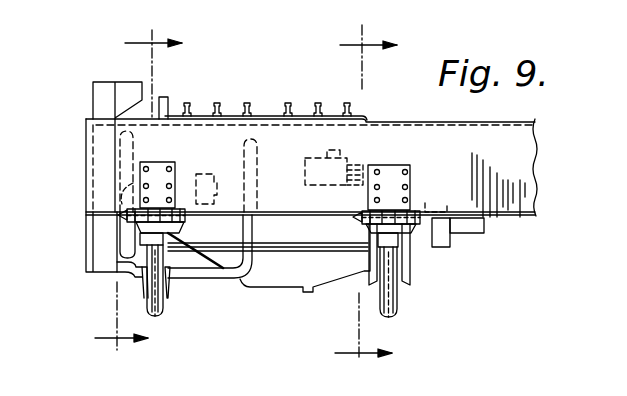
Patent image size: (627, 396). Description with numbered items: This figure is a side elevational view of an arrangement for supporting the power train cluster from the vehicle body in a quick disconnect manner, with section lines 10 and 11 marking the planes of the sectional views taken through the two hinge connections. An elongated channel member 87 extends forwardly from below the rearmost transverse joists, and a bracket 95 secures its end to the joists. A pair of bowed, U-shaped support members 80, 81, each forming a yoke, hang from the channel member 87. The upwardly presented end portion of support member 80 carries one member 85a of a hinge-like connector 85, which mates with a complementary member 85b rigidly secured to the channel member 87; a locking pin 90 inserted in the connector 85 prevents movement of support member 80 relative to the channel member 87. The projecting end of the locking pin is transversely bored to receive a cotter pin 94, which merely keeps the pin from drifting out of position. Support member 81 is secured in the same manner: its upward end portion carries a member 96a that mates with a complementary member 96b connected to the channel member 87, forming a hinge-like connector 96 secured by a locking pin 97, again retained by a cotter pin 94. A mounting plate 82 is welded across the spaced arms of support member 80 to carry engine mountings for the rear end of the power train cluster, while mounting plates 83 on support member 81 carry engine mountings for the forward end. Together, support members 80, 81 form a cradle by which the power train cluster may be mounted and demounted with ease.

The section line 10- 10 is at (132, 194).
The section line 11- 11 is at (362, 199).
The elongated channel member 87 is at (533, 130).
The bracket 95 is at (100, 88).
The hinge-like connector 85 is at (176, 187).
The hinge connector member 85a is at (168, 230).
The complementary hinge connector member 85b is at (156, 165).
The locking pin 90 is at (186, 221).
The cotter pin 94 is at (117, 212).
The mounting plate 82 is at (143, 280).
The support member 80 is at (167, 316).
The hinge-like connector 96 is at (408, 188).
The hinge connector member 96a is at (403, 234).
The complementary hinge connector member 96b is at (393, 167).
The locking pin 97 is at (425, 213).
The mounting plate 83 is at (410, 272).
The support member 81 is at (398, 316).